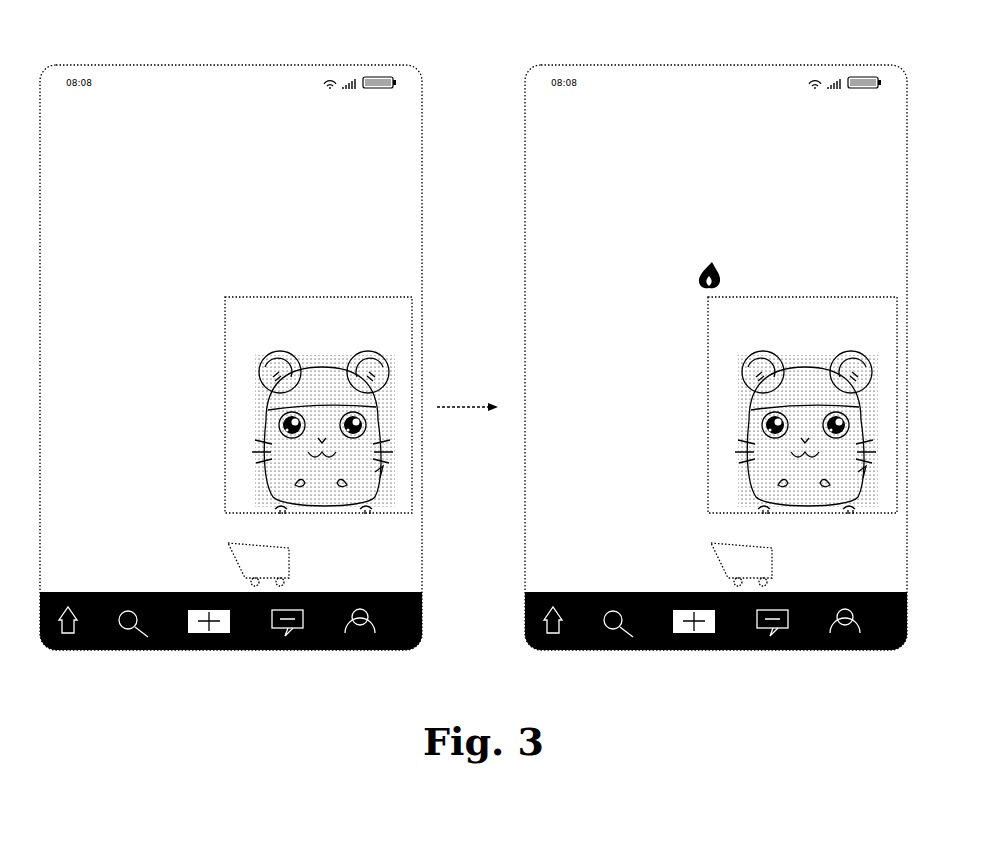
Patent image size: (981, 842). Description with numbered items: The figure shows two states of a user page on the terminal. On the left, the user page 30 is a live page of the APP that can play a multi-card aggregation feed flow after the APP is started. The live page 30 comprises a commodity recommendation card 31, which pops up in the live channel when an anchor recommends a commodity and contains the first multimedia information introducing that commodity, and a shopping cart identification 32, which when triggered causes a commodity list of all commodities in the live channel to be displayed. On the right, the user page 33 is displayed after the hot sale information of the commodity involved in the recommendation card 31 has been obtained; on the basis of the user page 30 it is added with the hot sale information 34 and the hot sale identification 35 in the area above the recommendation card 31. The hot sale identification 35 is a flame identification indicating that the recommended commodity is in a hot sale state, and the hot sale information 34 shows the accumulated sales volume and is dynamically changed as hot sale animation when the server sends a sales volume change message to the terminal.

The user page 30 is at (233, 65).
The commodity recommendation card 31 is at (318, 297).
The shopping cart identification 32 is at (247, 563).
The user page 33 is at (717, 65).
The hot sale information 34 is at (758, 265).
The hot sale identification 35 is at (702, 280).